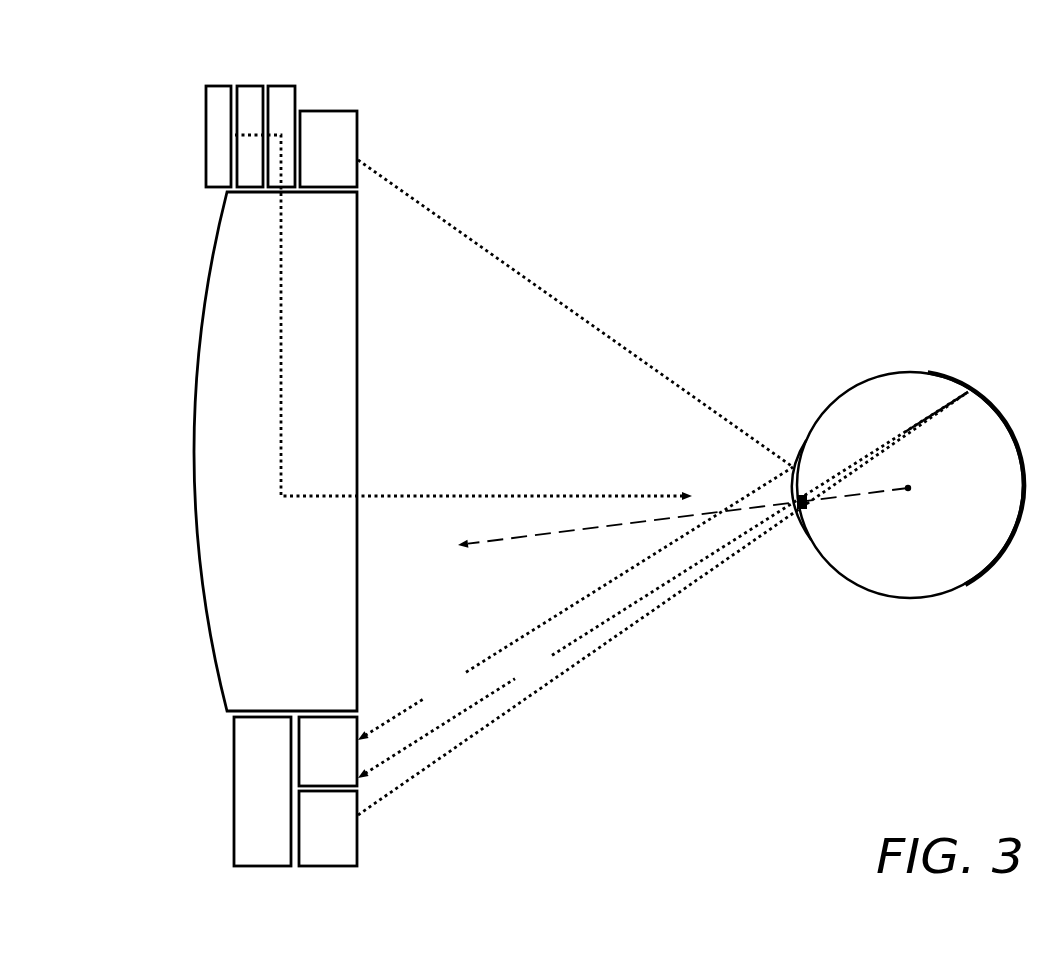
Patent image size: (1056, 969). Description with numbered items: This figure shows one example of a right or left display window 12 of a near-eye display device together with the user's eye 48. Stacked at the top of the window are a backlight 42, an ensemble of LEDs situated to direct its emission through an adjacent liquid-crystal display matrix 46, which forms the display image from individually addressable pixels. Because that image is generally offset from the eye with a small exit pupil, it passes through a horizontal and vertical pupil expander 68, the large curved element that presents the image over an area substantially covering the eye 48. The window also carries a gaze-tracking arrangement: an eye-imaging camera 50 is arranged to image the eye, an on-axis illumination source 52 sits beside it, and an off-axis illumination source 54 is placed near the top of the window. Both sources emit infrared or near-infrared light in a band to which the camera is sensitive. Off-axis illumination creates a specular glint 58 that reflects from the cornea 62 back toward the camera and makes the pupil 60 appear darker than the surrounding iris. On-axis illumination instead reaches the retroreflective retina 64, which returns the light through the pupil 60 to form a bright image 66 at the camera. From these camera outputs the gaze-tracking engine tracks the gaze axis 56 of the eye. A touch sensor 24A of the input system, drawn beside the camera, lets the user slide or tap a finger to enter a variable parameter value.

The display window 12 is at (72, 207).
The backlight 42 is at (206, 138).
The liquid-crystal display (LCD) matrix 46 is at (252, 86).
The off-axis illumination source 54 is at (317, 161).
The horizontal and vertical pupil expander 68 is at (244, 465).
The touch sensor 24A is at (245, 808).
The eye-imaging camera 50 is at (317, 766).
The on-axis illumination source 52 is at (317, 845).
The specular glint 58 is at (575, 603).
The bright image 66 is at (663, 585).
The gaze axis 56 is at (671, 523).
The eye 48 is at (942, 526).
The retina 64 is at (1008, 432).
The pupil 60 is at (817, 508).
The cornea 62 is at (805, 526).